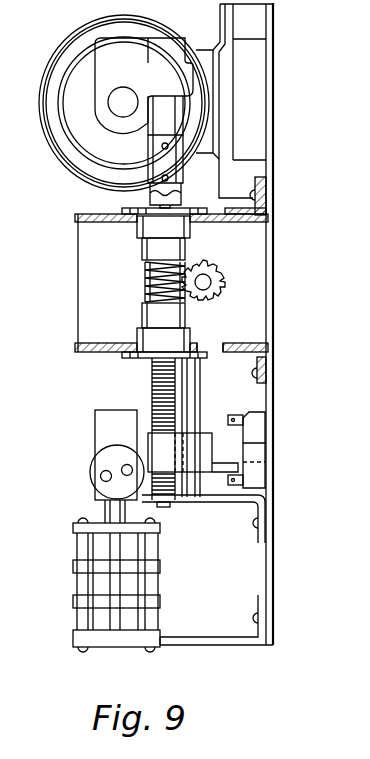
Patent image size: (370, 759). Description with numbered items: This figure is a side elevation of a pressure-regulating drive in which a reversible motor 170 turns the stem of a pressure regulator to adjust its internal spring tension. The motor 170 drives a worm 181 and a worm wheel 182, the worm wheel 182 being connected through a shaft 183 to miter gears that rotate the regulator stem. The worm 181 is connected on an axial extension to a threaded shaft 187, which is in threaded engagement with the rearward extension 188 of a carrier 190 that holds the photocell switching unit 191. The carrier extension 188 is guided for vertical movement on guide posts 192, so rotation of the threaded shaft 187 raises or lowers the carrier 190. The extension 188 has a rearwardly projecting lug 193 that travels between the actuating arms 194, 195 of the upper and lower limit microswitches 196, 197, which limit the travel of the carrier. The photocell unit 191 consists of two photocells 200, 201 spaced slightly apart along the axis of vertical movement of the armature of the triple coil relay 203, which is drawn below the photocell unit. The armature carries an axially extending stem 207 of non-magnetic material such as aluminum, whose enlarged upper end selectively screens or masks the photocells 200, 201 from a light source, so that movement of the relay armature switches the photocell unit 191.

The reversible motor 170 is at (72, 160).
The worm 181 is at (143, 281).
The worm wheel 182 is at (208, 266).
The shaft 183 is at (209, 287).
The threaded shaft 187 is at (157, 376).
The rearward extension 188 is at (150, 450).
The carrier 190 is at (100, 428).
The photocell switching unit 191 is at (103, 459).
The guide posts 192 is at (196, 382).
The lug 193 is at (225, 466).
The actuating arm 194 is at (233, 415).
The actuating arm 195 is at (232, 486).
The upper limit microswitch 196 is at (257, 428).
The lower limit microswitch 197 is at (257, 476).
The photocell 200 is at (127, 464).
The photocell 201 is at (100, 477).
The triple coil relay 203 is at (155, 580).
The stem 207 is at (108, 508).